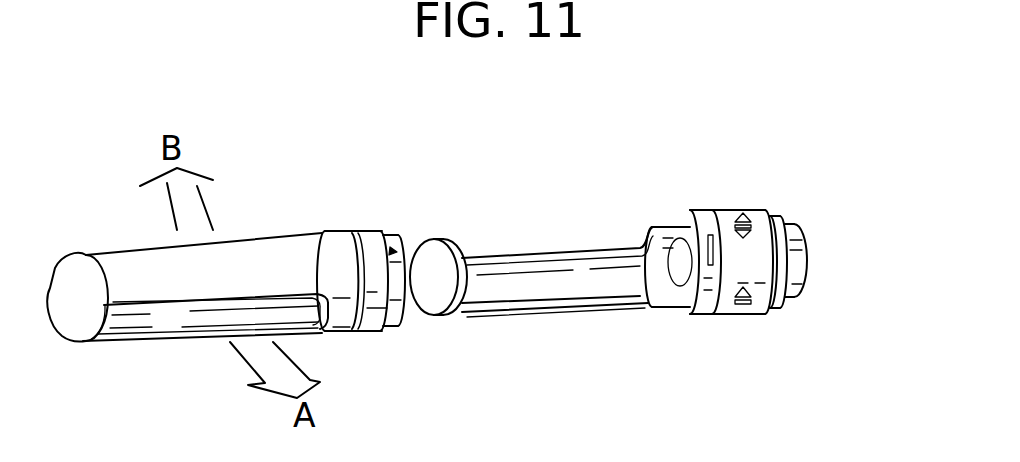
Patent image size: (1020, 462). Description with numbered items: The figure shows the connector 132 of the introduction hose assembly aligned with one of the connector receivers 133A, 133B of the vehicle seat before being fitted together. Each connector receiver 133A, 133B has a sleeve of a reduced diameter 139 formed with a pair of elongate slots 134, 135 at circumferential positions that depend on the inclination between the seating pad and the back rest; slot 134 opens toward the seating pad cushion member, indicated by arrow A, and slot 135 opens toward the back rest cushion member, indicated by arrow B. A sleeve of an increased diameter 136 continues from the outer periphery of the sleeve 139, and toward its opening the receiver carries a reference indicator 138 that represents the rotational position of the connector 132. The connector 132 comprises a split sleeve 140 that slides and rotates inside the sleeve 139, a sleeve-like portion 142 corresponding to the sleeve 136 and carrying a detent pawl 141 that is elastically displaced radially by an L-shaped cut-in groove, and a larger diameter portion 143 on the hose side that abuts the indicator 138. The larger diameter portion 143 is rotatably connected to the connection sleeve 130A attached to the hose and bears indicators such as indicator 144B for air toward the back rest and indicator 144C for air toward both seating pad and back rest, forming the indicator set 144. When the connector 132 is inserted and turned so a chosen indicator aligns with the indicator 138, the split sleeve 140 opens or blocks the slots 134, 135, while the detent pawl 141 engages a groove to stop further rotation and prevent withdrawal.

The connection sleeve 130A is at (793, 271).
The connector 132 is at (787, 218).
The connector receiver 133A is at (368, 225).
The connector receiver 133B is at (378, 232).
The elongate slot 134 is at (168, 317).
The elongate slot 135 is at (62, 270).
The sleeve of an increased diameter 136 is at (381, 284).
The reference indicator 138 is at (395, 249).
The sleeve of a reduced diameter 139 is at (270, 257).
The split sleeve 140 is at (577, 272).
The detent pawl 141 is at (702, 230).
The sleeve-like portion 142 is at (690, 310).
The larger diameter portion 143 is at (760, 255).
The rotary body 144 is at (720, 255).
The indicator 144B is at (745, 307).
The indicator 144C is at (753, 213).